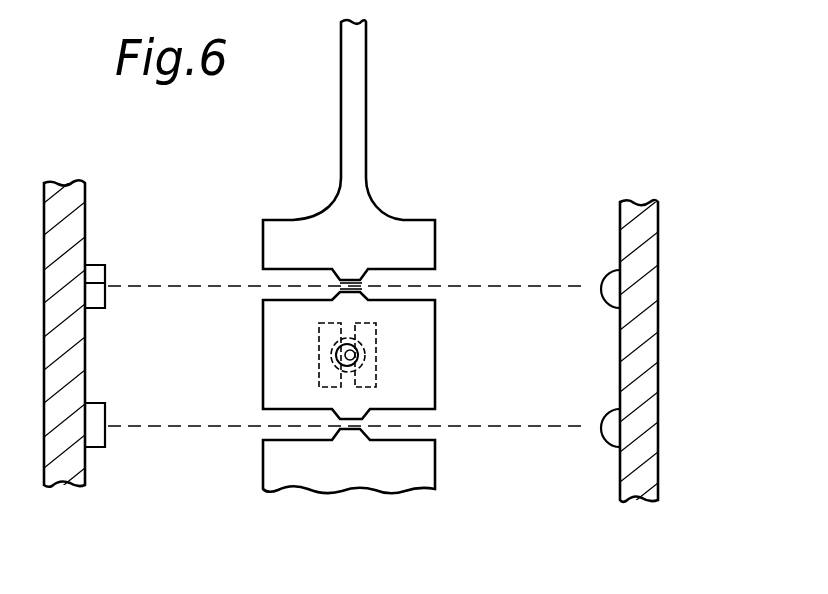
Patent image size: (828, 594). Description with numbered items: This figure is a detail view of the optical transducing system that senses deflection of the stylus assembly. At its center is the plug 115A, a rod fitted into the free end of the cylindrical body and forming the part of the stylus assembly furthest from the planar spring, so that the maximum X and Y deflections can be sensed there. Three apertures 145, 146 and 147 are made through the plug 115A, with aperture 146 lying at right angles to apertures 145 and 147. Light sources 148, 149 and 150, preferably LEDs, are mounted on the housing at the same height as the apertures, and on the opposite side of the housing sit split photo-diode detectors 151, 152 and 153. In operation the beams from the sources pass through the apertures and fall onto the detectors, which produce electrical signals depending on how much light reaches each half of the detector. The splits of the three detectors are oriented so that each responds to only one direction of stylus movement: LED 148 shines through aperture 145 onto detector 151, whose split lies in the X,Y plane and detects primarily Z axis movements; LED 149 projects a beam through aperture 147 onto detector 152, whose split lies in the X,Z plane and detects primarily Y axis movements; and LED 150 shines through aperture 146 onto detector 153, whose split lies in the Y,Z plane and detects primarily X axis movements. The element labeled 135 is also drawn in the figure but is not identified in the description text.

The actuating stem 135 is at (362, 82).
The plug 115A is at (275, 231).
The aperture 145 is at (343, 287).
The aperture 146 is at (350, 357).
The aperture 147 is at (360, 416).
The light source 148 is at (612, 291).
The light source 149 is at (610, 430).
The light source 150 is at (322, 357).
The split photo-diode detector 151 is at (103, 270).
The split photo-diode detector 152 is at (103, 410).
The split photo-diode detector 153 is at (367, 333).